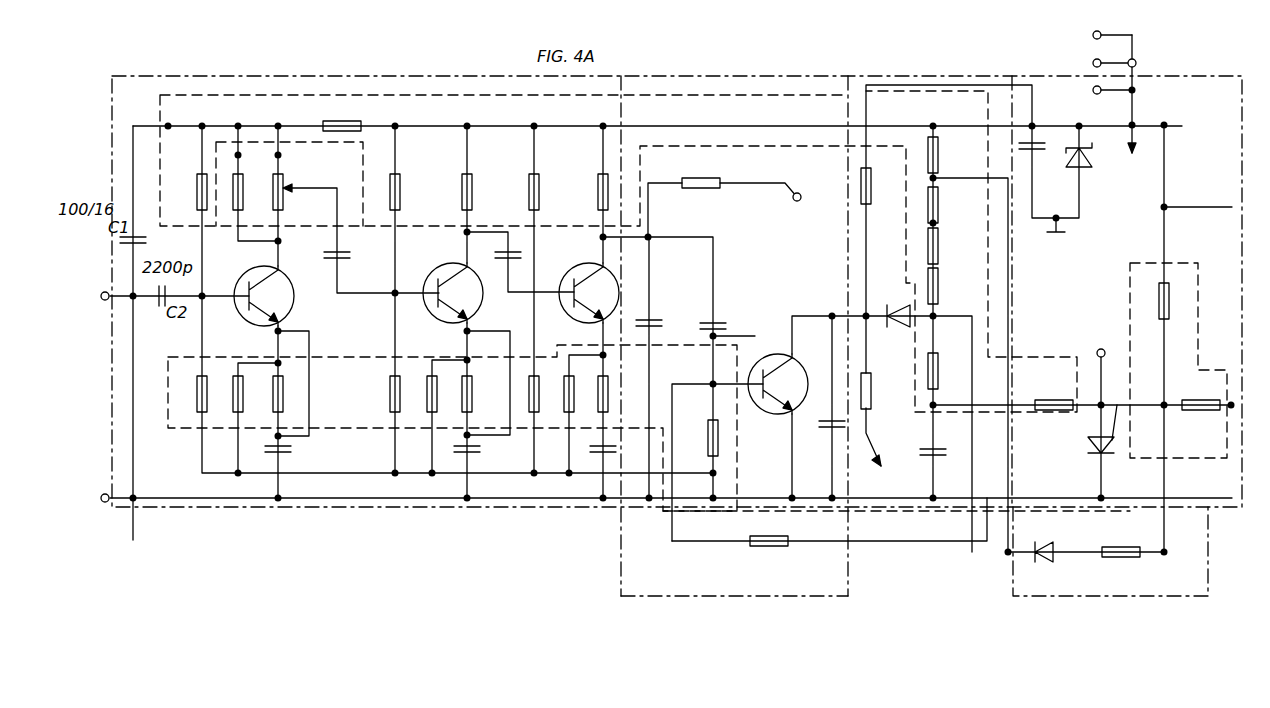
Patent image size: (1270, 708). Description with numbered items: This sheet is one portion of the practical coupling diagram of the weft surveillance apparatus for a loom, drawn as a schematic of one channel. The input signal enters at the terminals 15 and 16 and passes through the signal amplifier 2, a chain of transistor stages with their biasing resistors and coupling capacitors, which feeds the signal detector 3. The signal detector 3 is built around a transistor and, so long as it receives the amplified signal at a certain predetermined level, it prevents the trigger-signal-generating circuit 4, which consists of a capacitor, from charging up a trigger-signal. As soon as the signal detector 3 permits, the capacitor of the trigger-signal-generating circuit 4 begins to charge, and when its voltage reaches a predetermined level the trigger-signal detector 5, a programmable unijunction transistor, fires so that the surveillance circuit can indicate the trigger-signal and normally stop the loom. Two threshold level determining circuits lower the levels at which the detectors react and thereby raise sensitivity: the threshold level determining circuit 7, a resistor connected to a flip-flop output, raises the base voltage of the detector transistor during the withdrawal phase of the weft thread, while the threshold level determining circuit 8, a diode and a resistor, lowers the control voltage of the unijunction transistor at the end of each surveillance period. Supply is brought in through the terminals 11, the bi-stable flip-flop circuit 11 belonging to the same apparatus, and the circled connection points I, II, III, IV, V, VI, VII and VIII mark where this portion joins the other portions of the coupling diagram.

The signal amplifier 2 is at (338, 76).
The signal detector 3 is at (762, 76).
The trigger-signal-generating circuit 4 is at (893, 73).
The trigger-signal detector 5 is at (1190, 72).
The threshold level determining circuit 7 is at (724, 596).
The threshold level determining circuit 8 is at (1108, 596).
The bi-stable flip-flop circuit 11 is at (1097, 62).
The input terminal 15 is at (89, 297).
The ground terminal 16 is at (89, 500).
The test point I is at (1182, 126).
The test point II is at (1232, 207).
The test point III is at (1231, 405).
The test point IV is at (1232, 498).
The test point V is at (975, 541).
The test point VI is at (985, 548).
The test point VII is at (984, 552).
The test point VIII is at (1164, 552).